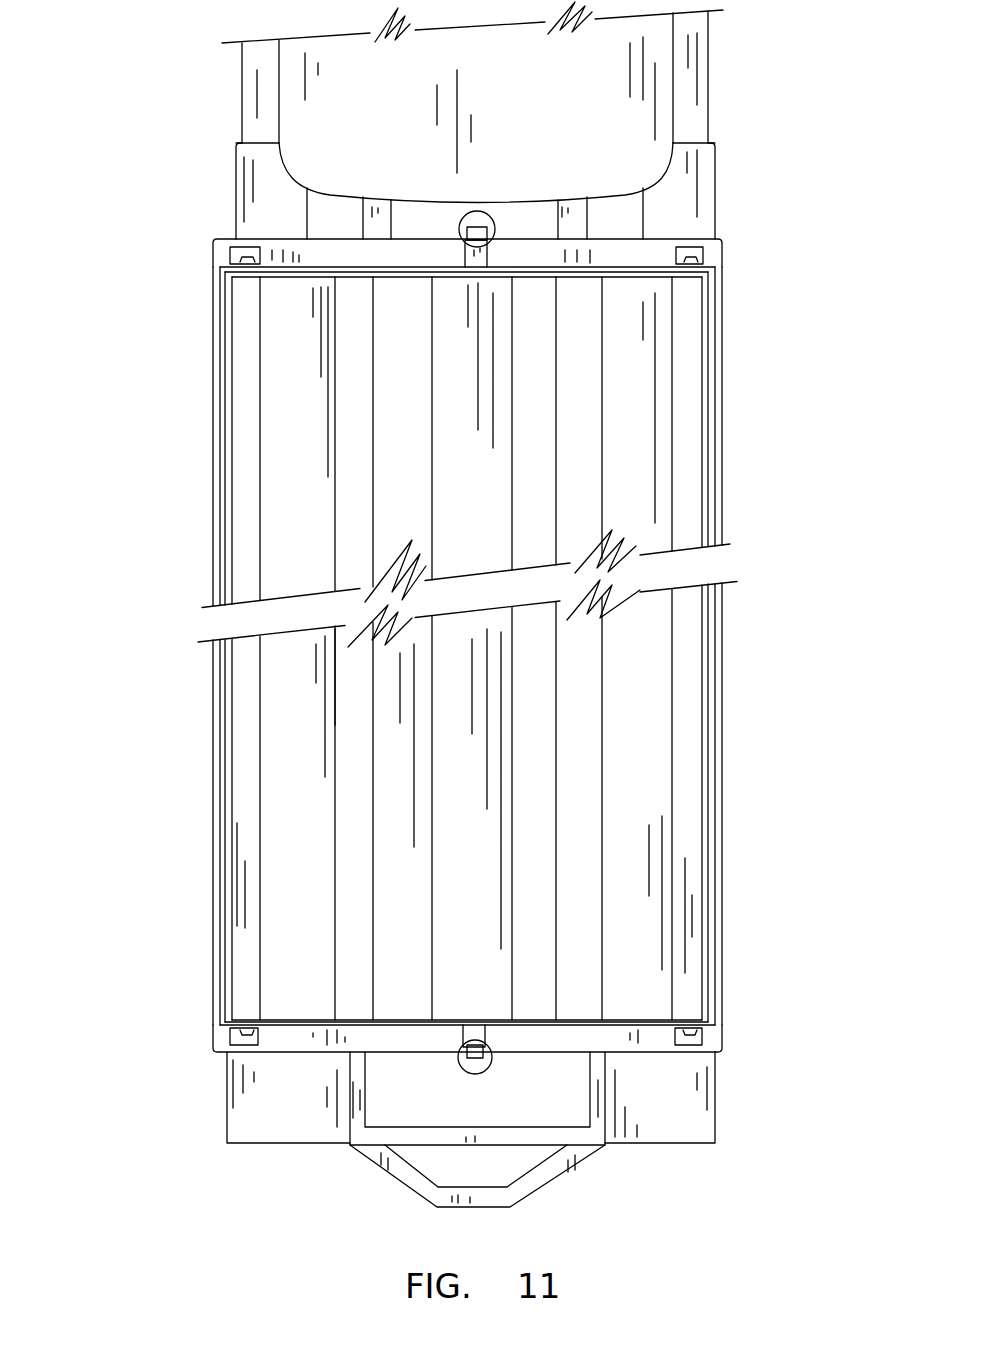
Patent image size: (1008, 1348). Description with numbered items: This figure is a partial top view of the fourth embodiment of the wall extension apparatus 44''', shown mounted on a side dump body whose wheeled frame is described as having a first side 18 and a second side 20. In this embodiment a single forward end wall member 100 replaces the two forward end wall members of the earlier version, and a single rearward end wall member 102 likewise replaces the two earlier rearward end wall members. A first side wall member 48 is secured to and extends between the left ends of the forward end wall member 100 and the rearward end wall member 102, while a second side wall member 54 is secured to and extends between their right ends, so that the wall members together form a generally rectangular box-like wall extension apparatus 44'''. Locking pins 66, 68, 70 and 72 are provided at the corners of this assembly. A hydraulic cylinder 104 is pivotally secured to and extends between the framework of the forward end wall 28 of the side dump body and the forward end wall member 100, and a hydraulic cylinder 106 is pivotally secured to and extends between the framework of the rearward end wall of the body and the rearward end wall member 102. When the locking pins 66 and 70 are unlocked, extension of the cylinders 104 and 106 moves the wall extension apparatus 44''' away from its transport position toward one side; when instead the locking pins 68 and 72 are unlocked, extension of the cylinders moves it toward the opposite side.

The first side 18 is at (182, 467).
The second side 20 is at (745, 514).
The forward end wall 28 is at (597, 255).
The wall extension apparatus 44''' is at (805, 384).
The first side wall member 48 is at (215, 745).
The second side wall member 54 is at (722, 768).
The locking pin 66 is at (228, 251).
The locking pin 68 is at (693, 257).
The locking pin 70 is at (243, 1040).
The locking pin 72 is at (705, 1036).
The forward end wall member 100 is at (622, 270).
The rearward end wall member 102 is at (643, 1020).
The hydraulic cylinder 104 is at (492, 222).
The hydraulic cylinder 106 is at (490, 1065).